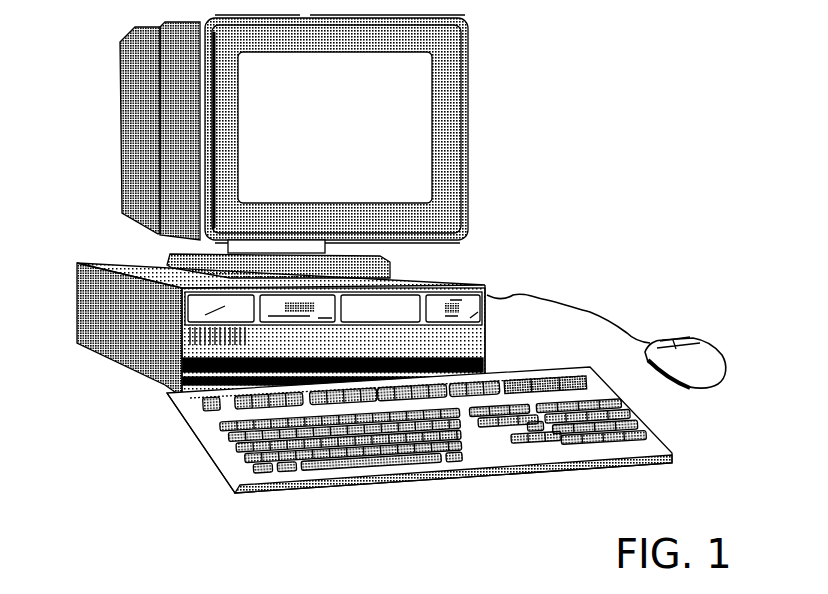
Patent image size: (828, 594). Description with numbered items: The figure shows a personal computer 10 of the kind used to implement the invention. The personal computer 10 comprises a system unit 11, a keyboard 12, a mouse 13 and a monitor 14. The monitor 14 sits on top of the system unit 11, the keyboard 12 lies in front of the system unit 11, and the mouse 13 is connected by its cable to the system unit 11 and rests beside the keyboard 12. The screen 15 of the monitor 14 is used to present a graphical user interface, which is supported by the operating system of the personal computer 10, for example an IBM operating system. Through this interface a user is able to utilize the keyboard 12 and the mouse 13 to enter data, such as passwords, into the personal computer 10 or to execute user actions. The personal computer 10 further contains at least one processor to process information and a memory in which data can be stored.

The personal computer 10 is at (660, 125).
The system unit 11 is at (120, 353).
The keyboard 12 is at (343, 483).
The mouse 13 is at (707, 362).
The monitor 14 is at (130, 107).
The screen 15 is at (423, 153).